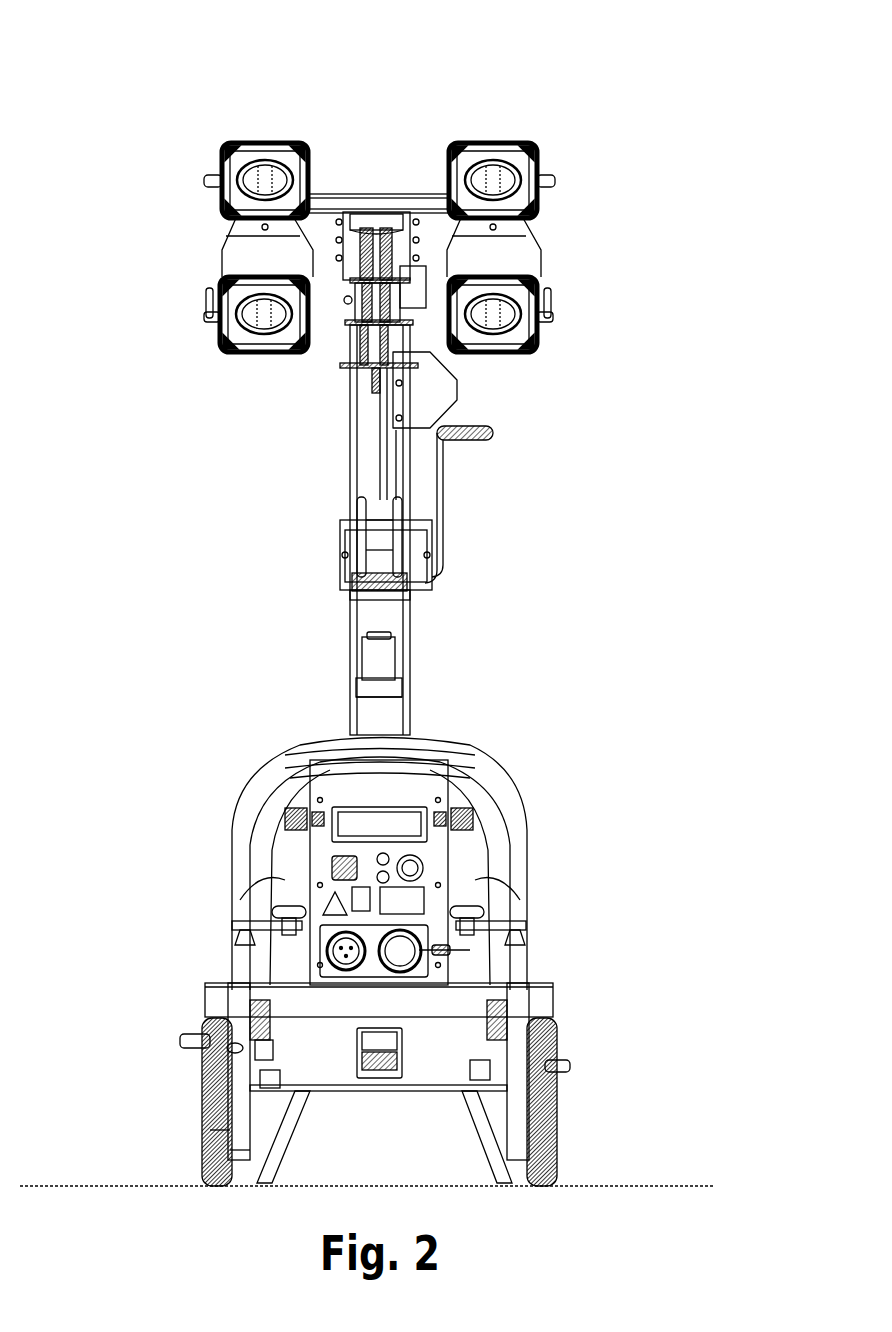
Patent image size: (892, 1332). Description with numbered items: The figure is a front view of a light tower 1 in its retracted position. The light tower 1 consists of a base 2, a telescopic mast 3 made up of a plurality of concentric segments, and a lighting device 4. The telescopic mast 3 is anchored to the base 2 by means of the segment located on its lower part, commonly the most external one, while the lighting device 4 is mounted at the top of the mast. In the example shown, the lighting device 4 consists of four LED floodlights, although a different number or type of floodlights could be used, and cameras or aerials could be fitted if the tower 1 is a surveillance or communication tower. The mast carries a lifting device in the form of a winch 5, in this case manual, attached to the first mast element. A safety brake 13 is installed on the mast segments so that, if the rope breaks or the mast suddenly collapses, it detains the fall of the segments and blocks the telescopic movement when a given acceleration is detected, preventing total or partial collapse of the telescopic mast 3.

The light tower 1 is at (383, 106).
The base 2 is at (212, 923).
The telescopic mast 3 is at (333, 458).
The lighting device 4 is at (205, 206).
The winch 5 is at (432, 552).
The safety brake 13 is at (432, 390).